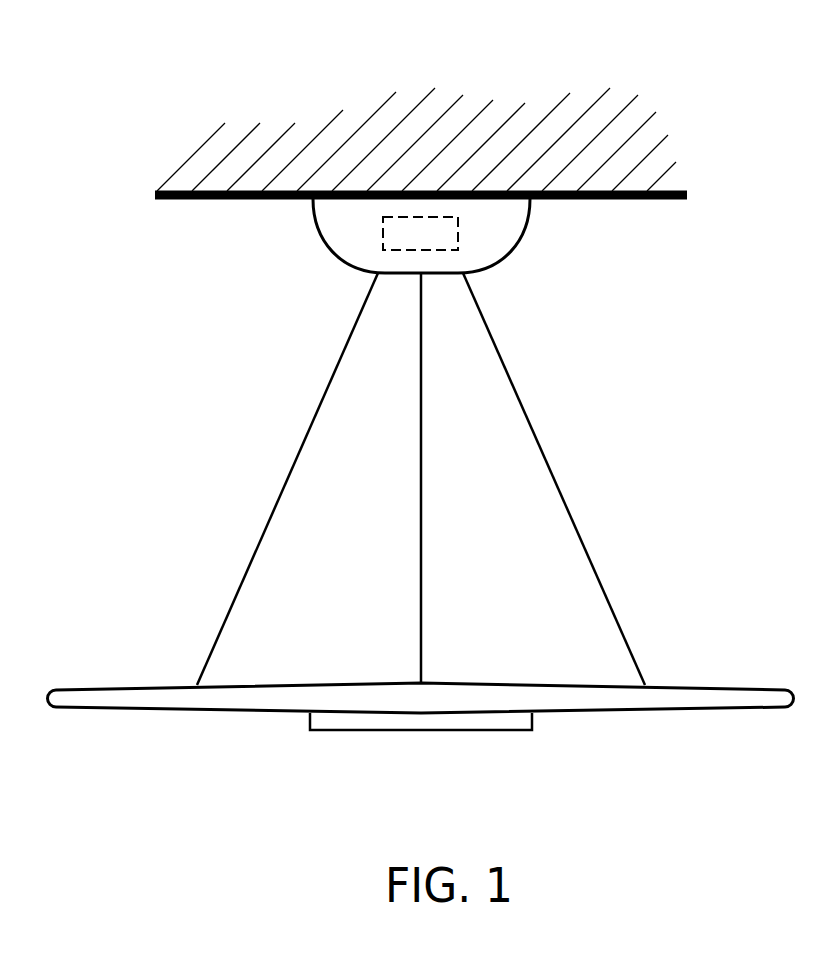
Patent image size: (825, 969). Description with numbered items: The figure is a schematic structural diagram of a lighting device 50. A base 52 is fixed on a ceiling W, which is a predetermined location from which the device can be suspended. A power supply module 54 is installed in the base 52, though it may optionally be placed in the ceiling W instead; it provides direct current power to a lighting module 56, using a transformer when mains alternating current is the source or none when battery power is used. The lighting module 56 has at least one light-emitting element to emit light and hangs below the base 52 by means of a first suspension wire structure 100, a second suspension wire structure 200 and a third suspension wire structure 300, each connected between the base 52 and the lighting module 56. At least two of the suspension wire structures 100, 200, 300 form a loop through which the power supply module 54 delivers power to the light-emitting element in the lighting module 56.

The lighting device 50 is at (118, 51).
The ceiling W is at (628, 200).
The base 52 is at (350, 233).
The power supply module 54 is at (410, 233).
The first suspension wire structure 100 is at (245, 572).
The second suspension wire structure 200 is at (420, 552).
The third suspension wire structure 300 is at (587, 555).
The lighting module 56 is at (702, 702).